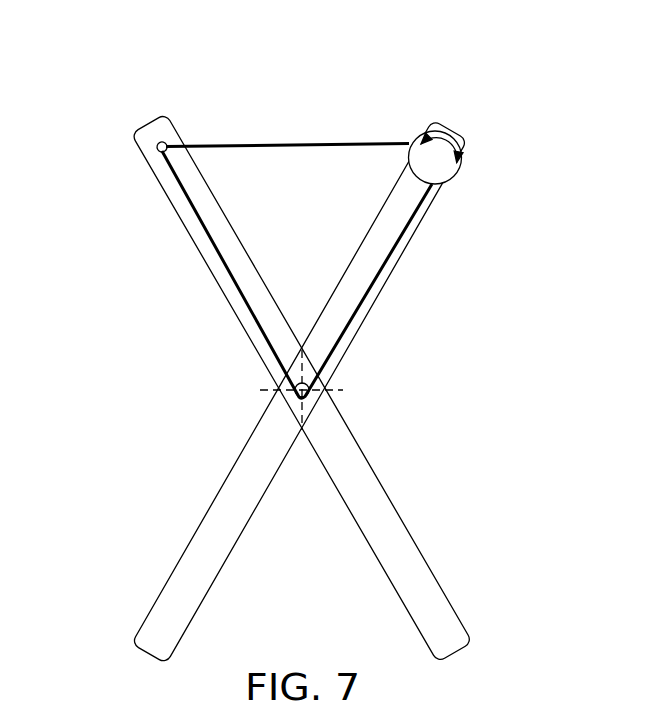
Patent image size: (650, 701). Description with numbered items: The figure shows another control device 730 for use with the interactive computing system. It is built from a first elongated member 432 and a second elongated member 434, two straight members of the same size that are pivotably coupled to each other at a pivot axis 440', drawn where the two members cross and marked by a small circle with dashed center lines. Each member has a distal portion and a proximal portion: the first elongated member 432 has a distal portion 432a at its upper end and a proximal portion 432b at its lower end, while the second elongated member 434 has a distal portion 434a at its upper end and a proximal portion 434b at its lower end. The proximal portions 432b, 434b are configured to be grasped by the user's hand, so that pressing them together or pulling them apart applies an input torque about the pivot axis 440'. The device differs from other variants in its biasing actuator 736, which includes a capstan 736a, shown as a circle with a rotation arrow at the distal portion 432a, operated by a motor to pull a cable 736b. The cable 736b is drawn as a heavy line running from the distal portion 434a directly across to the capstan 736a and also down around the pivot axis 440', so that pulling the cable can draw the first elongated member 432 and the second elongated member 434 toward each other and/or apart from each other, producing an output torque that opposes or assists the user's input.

The control device 730 is at (329, 338).
The first elongated member 432 is at (292, 392).
The distal portion of the first elongated member 432a is at (380, 297).
The proximal portion of the first elongated member 432b is at (178, 563).
The second elongated member 434 is at (324, 388).
The distal portion of the second elongated member 434a is at (188, 233).
The proximal portion of the second elongated member 434b is at (429, 571).
The pivot axis 440' is at (351, 377).
The biasing actuator 736 is at (512, 150).
The capstan 736a is at (459, 174).
The cable 736b is at (420, 207).